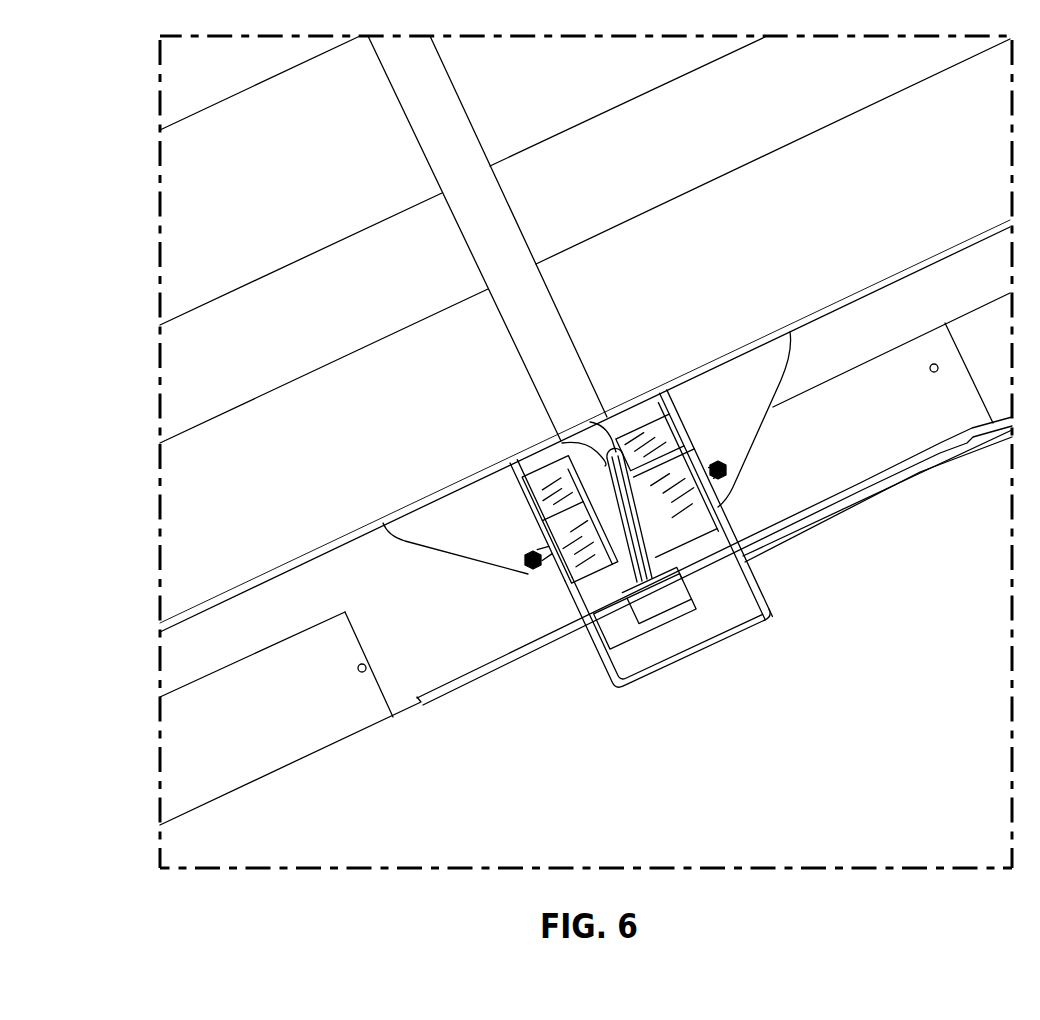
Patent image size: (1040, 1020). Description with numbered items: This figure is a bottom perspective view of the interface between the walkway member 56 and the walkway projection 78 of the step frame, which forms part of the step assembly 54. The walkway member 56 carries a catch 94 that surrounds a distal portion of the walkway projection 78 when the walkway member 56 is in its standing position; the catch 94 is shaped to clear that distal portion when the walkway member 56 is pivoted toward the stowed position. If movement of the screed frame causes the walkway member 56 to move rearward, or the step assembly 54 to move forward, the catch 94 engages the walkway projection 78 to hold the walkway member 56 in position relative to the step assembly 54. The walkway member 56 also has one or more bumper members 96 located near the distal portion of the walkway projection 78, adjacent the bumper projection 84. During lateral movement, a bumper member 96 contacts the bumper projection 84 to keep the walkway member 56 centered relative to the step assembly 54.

The step assembly 54 is at (833, 442).
The walkway member 56 is at (347, 209).
The walkway projection 78 is at (670, 600).
The bumper projection 84 is at (615, 583).
The catch 94 is at (643, 675).
The bumper member 96 is at (568, 568).